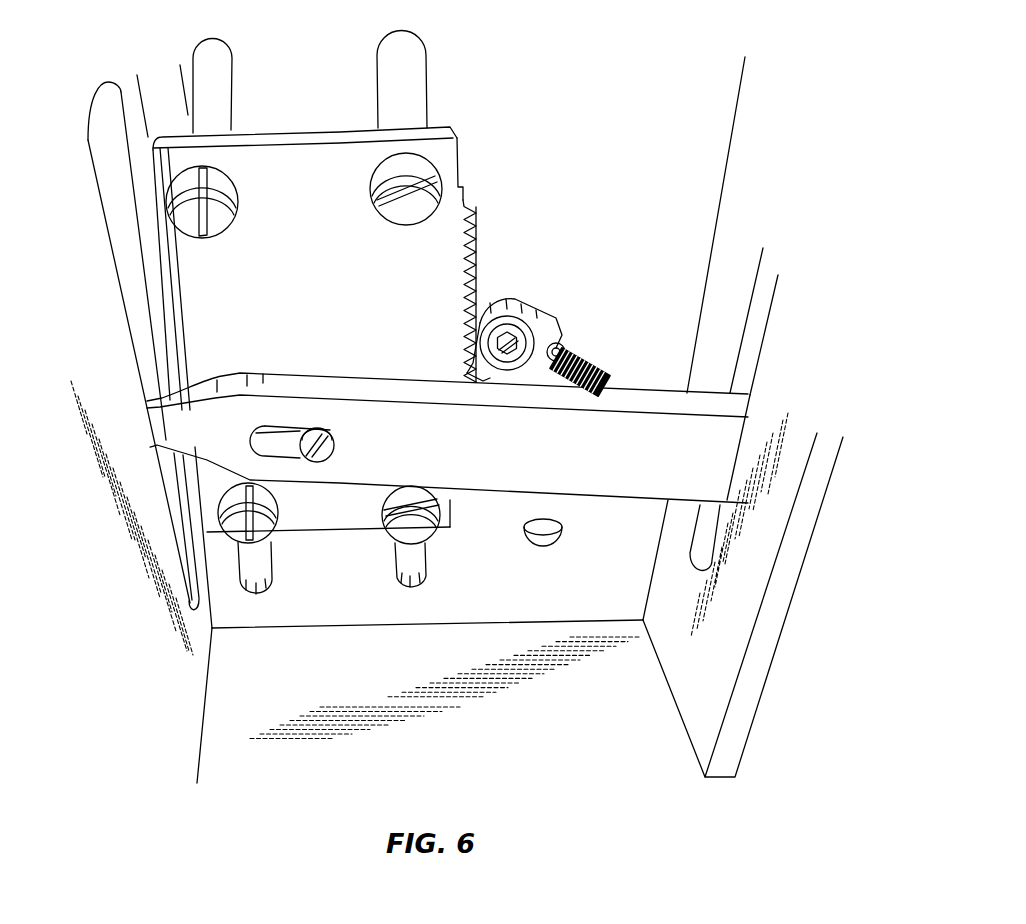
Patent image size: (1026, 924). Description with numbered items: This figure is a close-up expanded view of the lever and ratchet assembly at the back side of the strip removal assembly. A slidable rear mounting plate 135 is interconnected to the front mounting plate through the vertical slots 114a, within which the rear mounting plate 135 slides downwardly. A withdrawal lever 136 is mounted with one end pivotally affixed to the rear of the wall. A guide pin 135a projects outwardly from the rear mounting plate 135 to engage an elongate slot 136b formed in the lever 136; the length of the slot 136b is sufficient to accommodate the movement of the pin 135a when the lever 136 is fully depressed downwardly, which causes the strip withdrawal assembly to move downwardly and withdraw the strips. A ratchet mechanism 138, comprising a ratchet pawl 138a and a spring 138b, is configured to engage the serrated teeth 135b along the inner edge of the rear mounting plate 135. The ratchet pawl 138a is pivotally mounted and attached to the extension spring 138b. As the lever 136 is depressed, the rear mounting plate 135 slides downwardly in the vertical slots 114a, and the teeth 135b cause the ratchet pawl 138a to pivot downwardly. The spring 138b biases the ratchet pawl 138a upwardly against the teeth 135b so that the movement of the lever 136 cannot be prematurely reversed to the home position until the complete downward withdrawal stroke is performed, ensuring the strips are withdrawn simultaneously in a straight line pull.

The vertical slots 114a is at (375, 77).
The rear mounting plate 135 is at (200, 287).
The guide pin 135a is at (332, 433).
The serrated teeth 135b is at (476, 270).
The withdrawal lever 136 is at (448, 467).
The elongate slot 136b is at (277, 458).
The ratchet mechanism 138 is at (571, 301).
The ratchet pawl 138a is at (523, 316).
The spring 138b is at (590, 370).